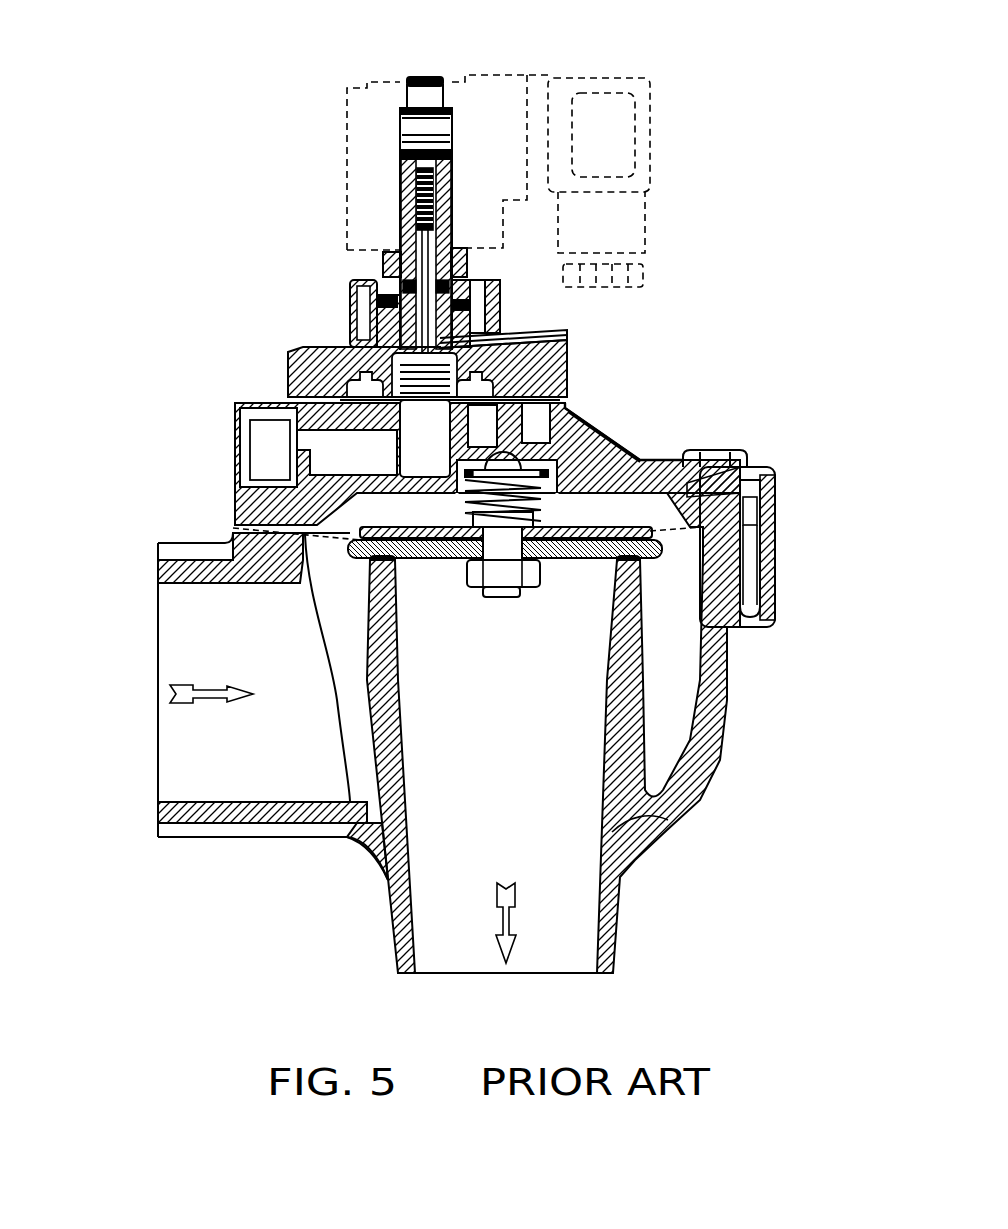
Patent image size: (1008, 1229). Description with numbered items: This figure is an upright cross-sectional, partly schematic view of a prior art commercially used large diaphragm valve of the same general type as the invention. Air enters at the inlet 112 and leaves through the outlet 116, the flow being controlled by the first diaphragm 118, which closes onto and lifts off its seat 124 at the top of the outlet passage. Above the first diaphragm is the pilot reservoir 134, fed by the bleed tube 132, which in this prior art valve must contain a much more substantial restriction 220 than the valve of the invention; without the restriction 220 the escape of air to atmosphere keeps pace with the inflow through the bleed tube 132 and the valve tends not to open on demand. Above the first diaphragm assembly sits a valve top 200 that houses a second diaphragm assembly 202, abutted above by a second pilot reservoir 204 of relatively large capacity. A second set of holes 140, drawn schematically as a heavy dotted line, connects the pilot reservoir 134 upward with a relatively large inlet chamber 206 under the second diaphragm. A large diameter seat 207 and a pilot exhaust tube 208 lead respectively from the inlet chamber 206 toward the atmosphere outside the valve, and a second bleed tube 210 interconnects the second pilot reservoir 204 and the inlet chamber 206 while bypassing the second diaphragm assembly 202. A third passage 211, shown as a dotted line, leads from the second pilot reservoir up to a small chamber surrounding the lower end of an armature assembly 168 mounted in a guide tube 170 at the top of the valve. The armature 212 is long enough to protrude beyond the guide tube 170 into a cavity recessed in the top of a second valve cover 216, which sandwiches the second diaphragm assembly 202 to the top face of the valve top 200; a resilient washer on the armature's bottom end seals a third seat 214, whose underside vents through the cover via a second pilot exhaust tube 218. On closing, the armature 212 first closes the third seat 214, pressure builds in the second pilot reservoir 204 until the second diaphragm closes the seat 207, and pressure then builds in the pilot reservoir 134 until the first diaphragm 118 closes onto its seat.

The inlet 112 is at (33, 722).
The outlet 116 is at (547, 985).
The first diaphragm 118 is at (392, 563).
The seat 124 is at (553, 733).
The bleed tube 132 is at (755, 598).
The pilot reservoir 134 is at (468, 547).
The second set of holes 140 is at (572, 445).
The armature assembly 168 is at (405, 217).
The guide tube 170 is at (398, 224).
The valve top 200 is at (590, 418).
The second diaphragm assembly 202 is at (498, 443).
The second pilot reservoir 204 is at (567, 378).
The inlet chamber 206 is at (373, 428).
The large diameter seat 207 is at (433, 420).
The pilot exhaust tube 208 is at (267, 450).
The second bleed tube 210 is at (302, 368).
The third passage 211 is at (345, 343).
The armature 212 is at (398, 184).
The third seat 214 is at (517, 323).
The second valve cover 216 is at (545, 331).
The second pilot exhaust tube 218 is at (557, 350).
The restriction 220 is at (792, 563).